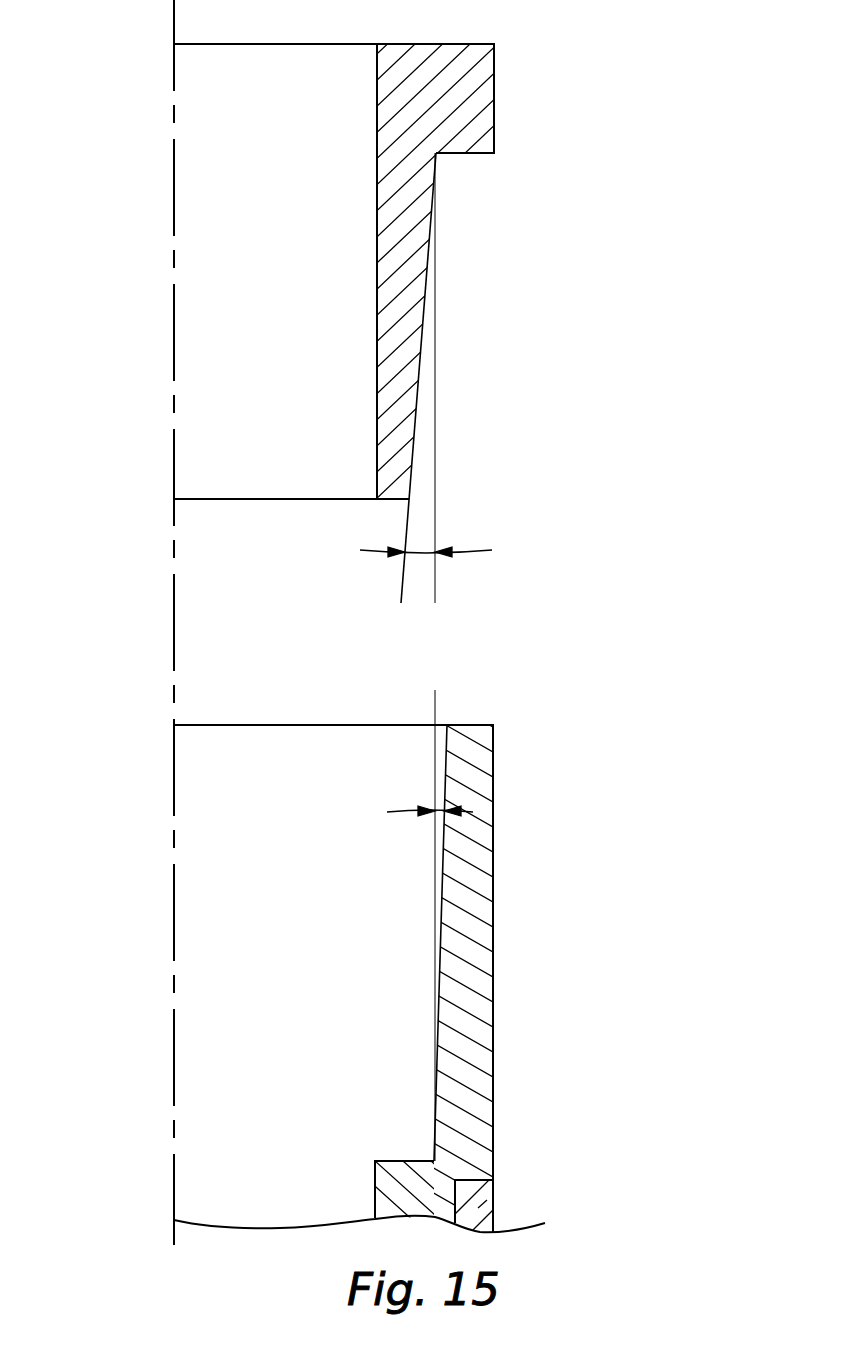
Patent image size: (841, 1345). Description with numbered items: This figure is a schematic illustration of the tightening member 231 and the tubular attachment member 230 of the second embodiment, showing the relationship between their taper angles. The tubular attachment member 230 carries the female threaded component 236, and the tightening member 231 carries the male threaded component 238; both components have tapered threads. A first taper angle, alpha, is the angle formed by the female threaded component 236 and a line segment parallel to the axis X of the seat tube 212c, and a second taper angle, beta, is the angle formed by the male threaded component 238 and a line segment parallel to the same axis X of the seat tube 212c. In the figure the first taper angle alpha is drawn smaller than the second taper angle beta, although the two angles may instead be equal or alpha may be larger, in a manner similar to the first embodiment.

The tubular attachment member 230 is at (520, 812).
The tightening member 231 is at (482, 324).
The female threaded component 236 is at (447, 746).
The male threaded component 238 is at (423, 305).
The seat tube 212c is at (492, 1190).
The axis X is at (174, 622).